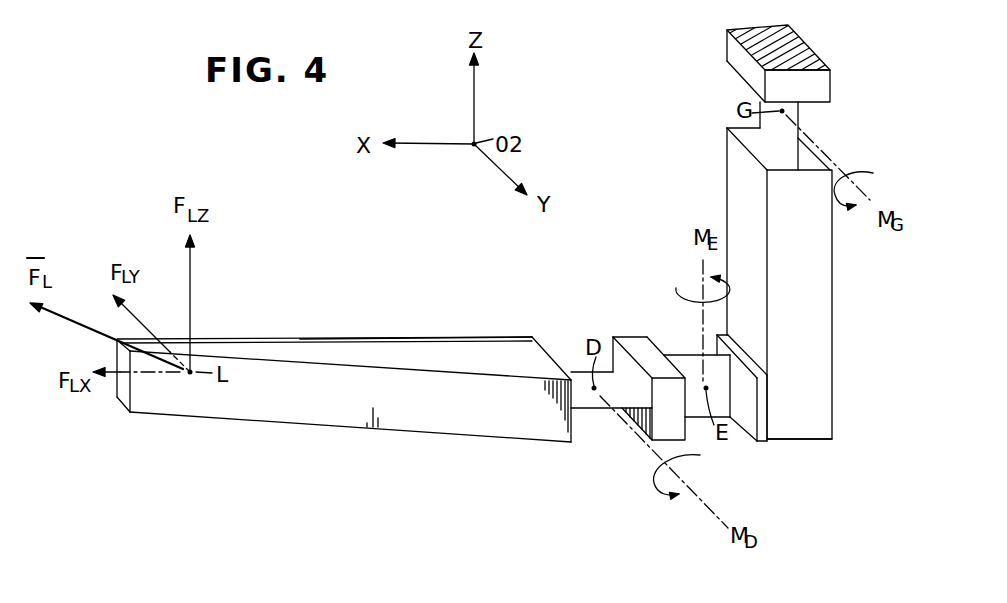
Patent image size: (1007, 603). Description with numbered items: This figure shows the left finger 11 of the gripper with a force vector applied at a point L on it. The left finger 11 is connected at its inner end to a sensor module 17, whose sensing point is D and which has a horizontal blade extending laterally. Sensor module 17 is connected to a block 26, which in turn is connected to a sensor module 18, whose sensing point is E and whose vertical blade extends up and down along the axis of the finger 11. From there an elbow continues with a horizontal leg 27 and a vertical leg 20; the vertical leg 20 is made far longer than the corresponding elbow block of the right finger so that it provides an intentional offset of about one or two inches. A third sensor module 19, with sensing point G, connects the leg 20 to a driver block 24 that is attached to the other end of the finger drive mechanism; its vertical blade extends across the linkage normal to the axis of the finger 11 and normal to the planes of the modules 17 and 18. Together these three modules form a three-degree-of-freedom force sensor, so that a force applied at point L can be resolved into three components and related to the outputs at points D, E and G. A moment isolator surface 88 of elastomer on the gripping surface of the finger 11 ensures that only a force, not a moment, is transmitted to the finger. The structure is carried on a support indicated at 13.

The left finger 11 is at (435, 422).
The support base 13 is at (828, 457).
The sensor module 17 is at (583, 403).
The sensor module 18 is at (691, 362).
The sensor module 19 is at (798, 115).
The vertical leg 20 is at (825, 318).
The driver block 24 is at (826, 83).
The block 26 is at (641, 346).
The horizontal leg 27 is at (763, 427).
The moment isolator surface 88 is at (448, 332).